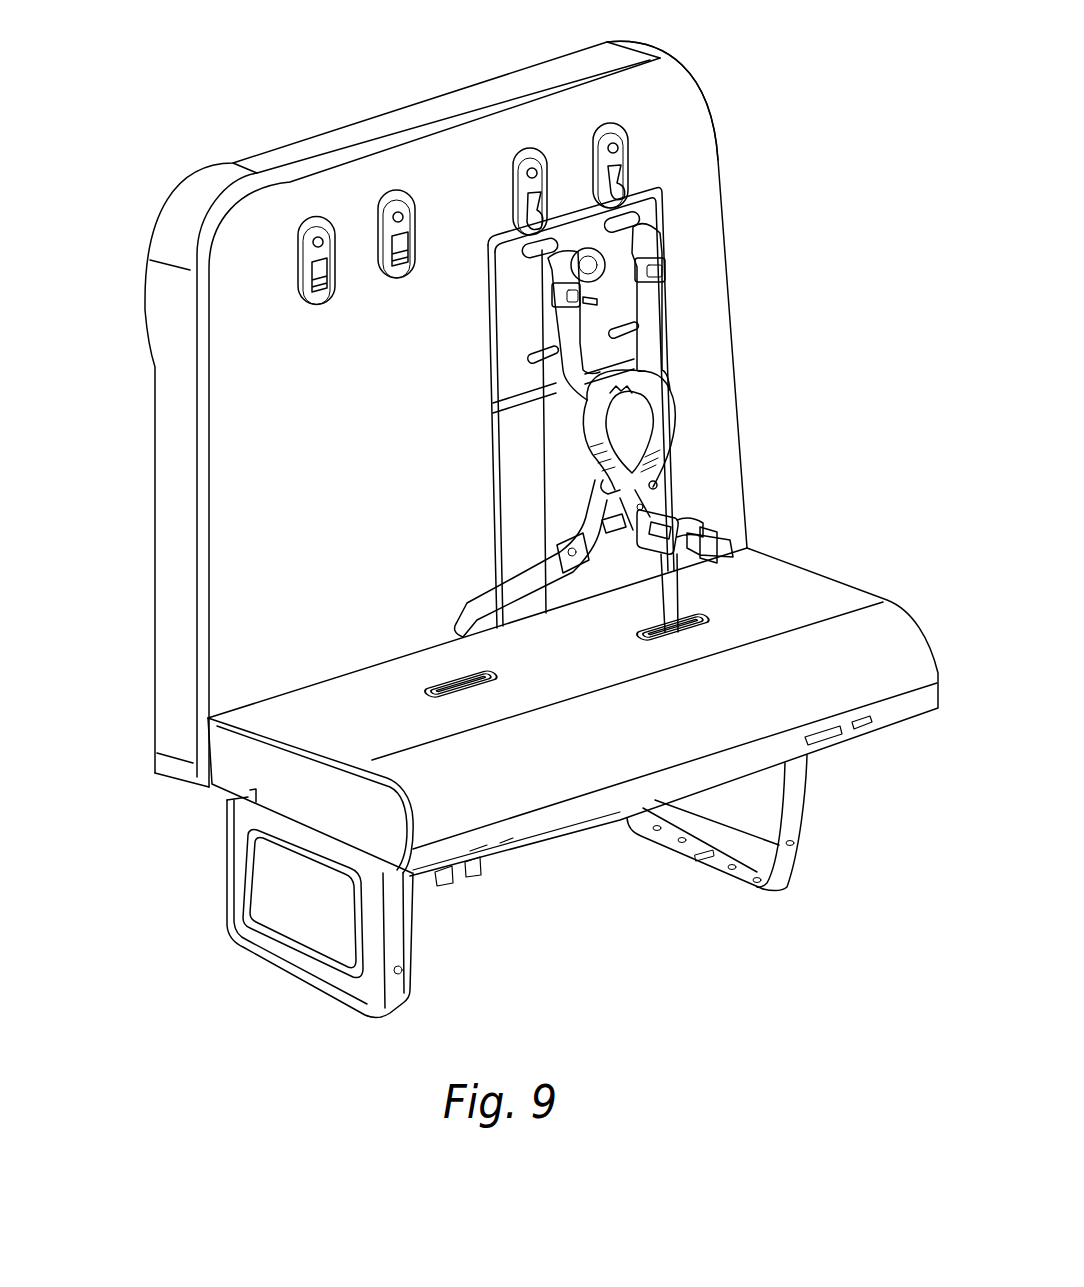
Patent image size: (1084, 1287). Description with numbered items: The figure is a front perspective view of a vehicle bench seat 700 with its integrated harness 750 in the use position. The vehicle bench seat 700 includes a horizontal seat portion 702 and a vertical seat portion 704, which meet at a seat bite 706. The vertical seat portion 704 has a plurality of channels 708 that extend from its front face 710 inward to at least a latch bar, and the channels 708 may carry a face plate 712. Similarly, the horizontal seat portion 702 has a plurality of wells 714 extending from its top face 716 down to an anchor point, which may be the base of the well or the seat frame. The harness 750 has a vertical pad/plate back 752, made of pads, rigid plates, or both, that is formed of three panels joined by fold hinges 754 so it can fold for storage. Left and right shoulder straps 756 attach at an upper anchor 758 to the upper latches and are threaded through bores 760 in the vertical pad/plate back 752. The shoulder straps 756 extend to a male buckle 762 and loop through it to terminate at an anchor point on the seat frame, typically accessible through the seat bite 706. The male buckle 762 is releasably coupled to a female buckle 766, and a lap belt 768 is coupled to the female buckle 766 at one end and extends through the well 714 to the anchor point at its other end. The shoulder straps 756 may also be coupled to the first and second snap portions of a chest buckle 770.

The vehicle bench seat 700 is at (164, 928).
The horizontal seat portion 702 is at (252, 772).
The vertical seat portion 704 is at (173, 588).
The seat bite 706 is at (160, 702).
The channels 708 is at (397, 247).
The front face 710 is at (298, 451).
The face plate 712 is at (305, 305).
The wells 714 is at (440, 695).
The top face 716 is at (348, 724).
The integrated harness 750 is at (762, 296).
The vertical pad/plate back 752 is at (673, 360).
The fold hinges 754 is at (493, 420).
The shoulder straps 756 is at (700, 207).
The upper anchor 758 is at (700, 122).
The bores 760 is at (513, 240).
The male buckle 762 is at (640, 497).
The female buckle 766 is at (668, 547).
The lap belt 768 is at (650, 590).
The chest buckle 770 is at (593, 403).